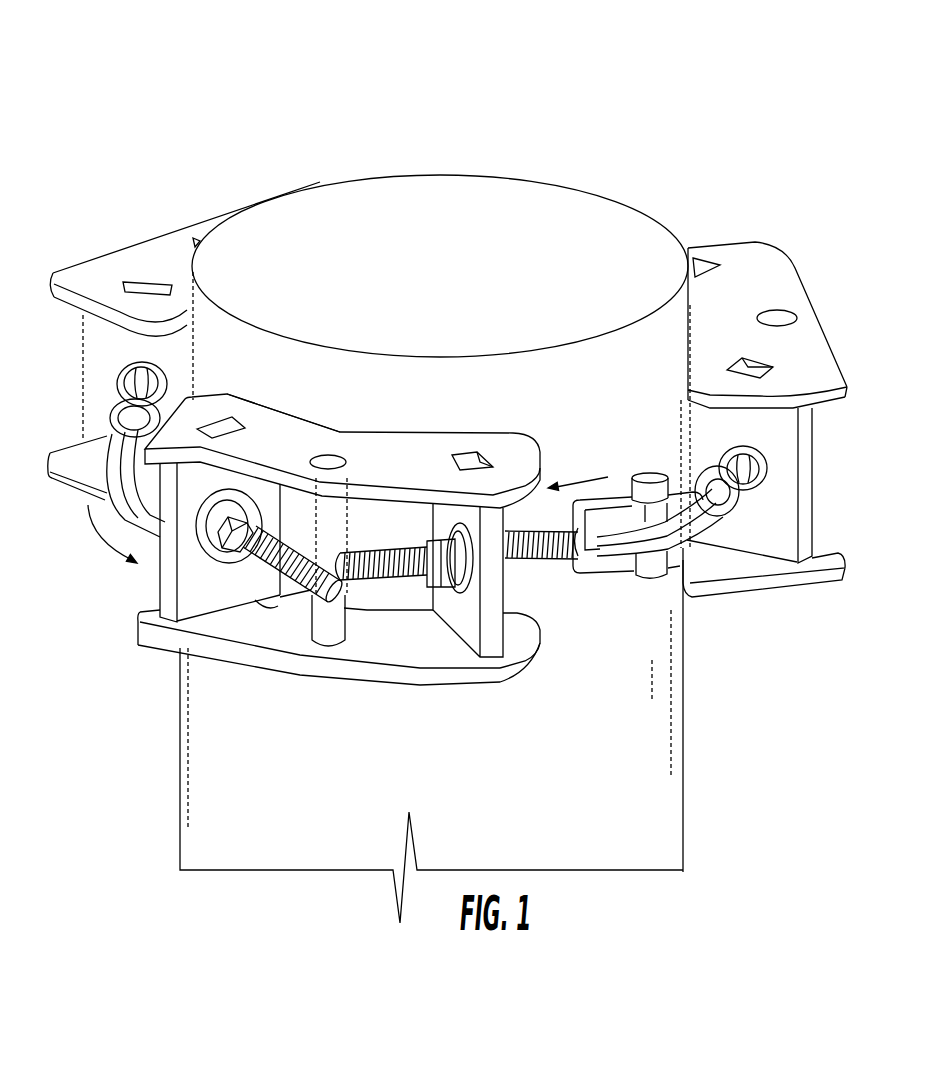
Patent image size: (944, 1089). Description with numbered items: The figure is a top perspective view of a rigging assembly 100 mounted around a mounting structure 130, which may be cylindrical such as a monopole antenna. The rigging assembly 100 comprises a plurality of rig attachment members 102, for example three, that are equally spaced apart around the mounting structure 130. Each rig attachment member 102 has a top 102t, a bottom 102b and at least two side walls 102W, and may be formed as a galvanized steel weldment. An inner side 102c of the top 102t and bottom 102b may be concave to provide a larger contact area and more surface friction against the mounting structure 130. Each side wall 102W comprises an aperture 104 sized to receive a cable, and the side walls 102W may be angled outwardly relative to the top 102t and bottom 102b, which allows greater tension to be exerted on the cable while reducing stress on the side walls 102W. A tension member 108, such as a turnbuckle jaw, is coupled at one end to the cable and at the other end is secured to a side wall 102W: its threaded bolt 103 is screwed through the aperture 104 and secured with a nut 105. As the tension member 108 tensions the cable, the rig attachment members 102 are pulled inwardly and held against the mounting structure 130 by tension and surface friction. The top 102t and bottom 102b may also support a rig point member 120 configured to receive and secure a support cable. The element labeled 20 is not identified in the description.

The rigging assembly 100 is at (150, 92).
The mounting structure 130 is at (447, 276).
The rig attachment member 102 is at (91, 240).
The top 102t is at (514, 447).
The bottom 102b is at (235, 660).
The inner side 102c is at (355, 436).
The side wall 102W is at (163, 579).
The threaded bolt 103 is at (378, 558).
The aperture 104 is at (163, 388).
The nut 105 is at (443, 546).
The tension member 108 is at (611, 582).
The rig point member 120 is at (323, 646).
The threaded rod 20 is at (297, 594).